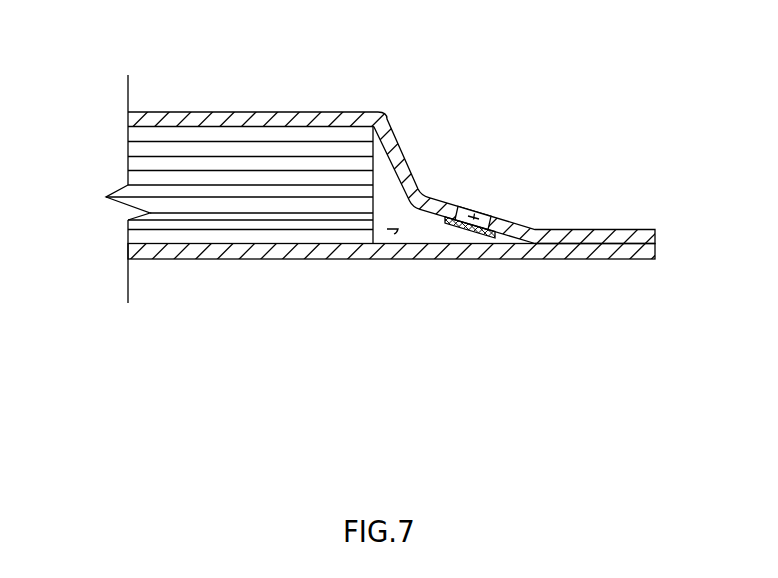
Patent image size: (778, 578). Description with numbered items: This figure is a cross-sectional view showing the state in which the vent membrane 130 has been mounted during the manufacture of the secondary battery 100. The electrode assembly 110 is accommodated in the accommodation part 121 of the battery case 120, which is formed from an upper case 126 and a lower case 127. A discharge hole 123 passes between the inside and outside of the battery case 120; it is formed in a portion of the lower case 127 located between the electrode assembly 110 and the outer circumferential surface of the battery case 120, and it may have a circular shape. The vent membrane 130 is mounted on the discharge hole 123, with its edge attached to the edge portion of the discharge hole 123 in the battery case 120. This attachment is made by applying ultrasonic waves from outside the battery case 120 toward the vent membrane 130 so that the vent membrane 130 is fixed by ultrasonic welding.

The secondary battery 100 is at (502, 43).
The electrode assembly 110 is at (119, 162).
The battery case 120 is at (389, 224).
The accommodation part 121 is at (393, 233).
The discharge hole 123 is at (475, 217).
The upper case 126 is at (655, 252).
The lower case 127 is at (655, 238).
The vent membrane 130 is at (455, 228).